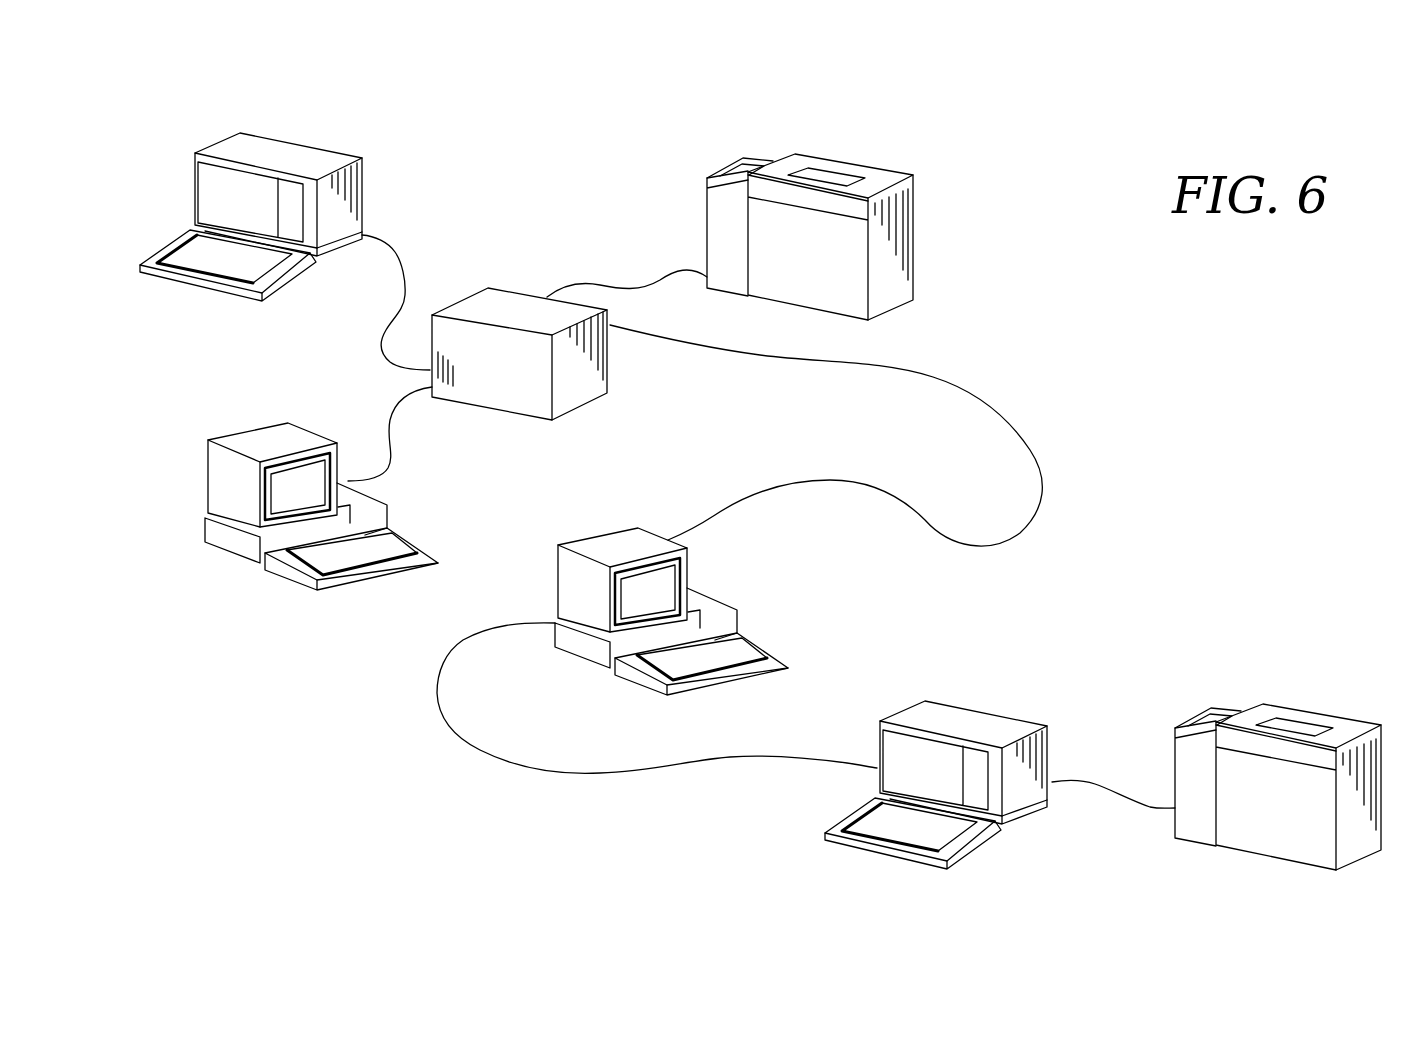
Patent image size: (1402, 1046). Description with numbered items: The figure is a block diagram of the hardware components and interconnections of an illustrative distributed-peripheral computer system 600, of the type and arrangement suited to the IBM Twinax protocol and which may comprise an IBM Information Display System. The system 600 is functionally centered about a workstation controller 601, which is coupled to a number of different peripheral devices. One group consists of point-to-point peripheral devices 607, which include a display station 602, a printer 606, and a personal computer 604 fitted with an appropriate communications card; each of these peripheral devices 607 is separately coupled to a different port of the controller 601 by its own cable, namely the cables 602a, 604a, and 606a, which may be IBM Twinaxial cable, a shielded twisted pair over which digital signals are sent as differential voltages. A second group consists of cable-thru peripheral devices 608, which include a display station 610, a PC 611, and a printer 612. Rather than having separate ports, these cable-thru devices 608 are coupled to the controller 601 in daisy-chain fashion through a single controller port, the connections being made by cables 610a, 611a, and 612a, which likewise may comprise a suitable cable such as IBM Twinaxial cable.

The computer system 600 is at (302, 778).
The workstation controller 601 is at (580, 408).
The display station 602 is at (298, 145).
The cable 602a is at (390, 247).
The personal computer 604 is at (240, 432).
The cable 604a is at (392, 458).
The printer 606 is at (890, 168).
The cable 606a is at (584, 280).
The point-to-point peripheral devices 607 is at (206, 129).
The cable-thru peripheral devices 608 is at (731, 553).
The display station 610 is at (588, 535).
The cable 610a is at (1043, 480).
The PC 611 is at (1005, 712).
The cable 611a is at (437, 678).
The printer 612 is at (1303, 705).
The cable 612a is at (1117, 792).